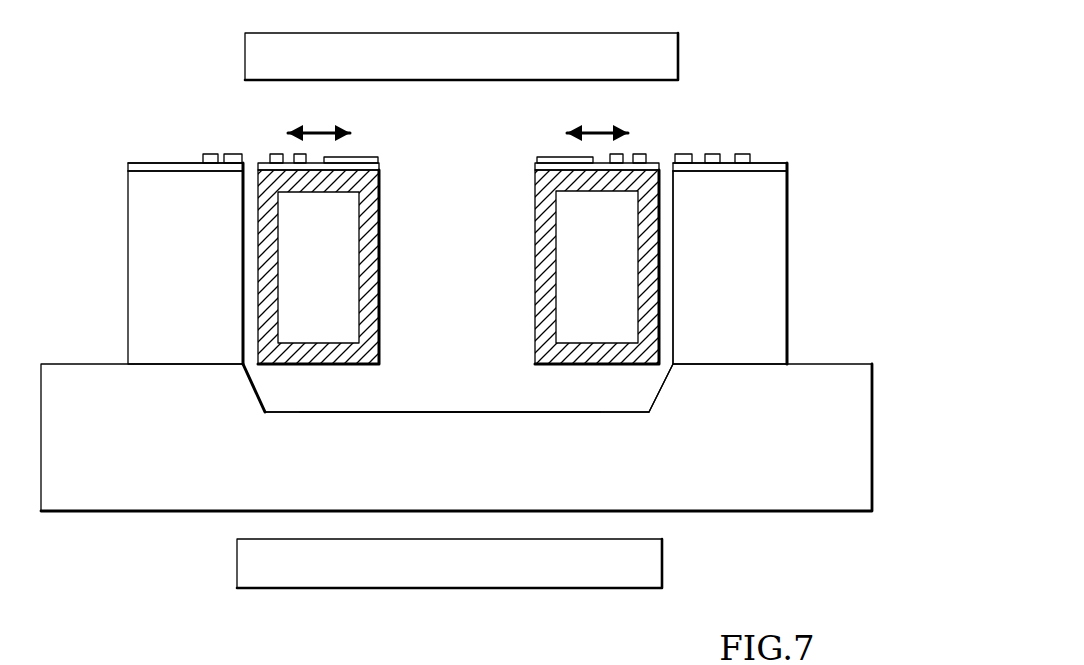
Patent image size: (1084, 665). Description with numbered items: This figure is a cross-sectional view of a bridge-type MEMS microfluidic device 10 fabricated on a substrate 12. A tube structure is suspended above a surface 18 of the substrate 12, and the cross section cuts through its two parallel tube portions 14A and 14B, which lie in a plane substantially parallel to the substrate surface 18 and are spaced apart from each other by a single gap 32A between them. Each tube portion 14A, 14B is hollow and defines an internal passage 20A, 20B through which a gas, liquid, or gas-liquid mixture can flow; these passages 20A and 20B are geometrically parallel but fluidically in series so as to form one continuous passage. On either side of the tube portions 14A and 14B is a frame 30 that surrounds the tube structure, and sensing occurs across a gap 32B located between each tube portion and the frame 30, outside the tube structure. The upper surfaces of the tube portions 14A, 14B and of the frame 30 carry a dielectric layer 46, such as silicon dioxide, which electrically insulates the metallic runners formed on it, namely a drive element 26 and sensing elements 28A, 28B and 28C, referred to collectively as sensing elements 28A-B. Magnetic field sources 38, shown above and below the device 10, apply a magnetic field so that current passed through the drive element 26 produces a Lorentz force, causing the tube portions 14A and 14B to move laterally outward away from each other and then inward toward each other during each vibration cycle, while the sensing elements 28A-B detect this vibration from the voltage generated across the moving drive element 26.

The MEMS microfluidic device 10 is at (185, 66).
The substrate 12 is at (730, 502).
The tube portion 14A is at (282, 365).
The tube portion 14B is at (565, 366).
The substrate surface 18 is at (439, 413).
The internal passage 20A is at (348, 274).
The internal passage 20B is at (624, 271).
The drive element 26 is at (379, 157).
The sensing element 28A is at (213, 153).
The sensing element 28B is at (619, 160).
The sensing element 28C is at (233, 153).
The sensing elements 28A-B is at (747, 158).
The frame 30 is at (137, 240).
The gap 32A is at (430, 357).
The gap 32B is at (250, 300).
The magnetic field source 38 is at (678, 47).
The dielectric layer 46 is at (142, 165).